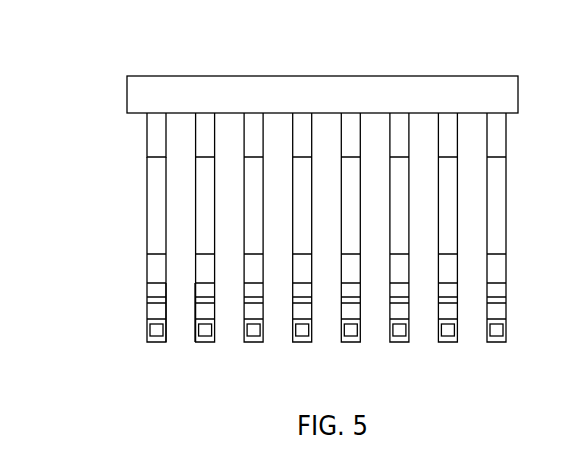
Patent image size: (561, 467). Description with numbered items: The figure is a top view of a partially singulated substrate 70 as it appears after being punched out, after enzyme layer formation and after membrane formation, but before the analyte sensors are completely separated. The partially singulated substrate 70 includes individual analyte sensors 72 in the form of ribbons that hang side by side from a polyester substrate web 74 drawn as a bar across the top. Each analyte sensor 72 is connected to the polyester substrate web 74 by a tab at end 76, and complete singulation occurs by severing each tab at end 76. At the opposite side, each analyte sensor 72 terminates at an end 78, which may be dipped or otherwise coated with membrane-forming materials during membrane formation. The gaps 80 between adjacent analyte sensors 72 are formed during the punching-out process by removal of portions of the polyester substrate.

The partially singulated substrate 70 is at (78, 379).
The analyte sensor 72 is at (147, 218).
The polyester substrate web 74 is at (141, 85).
The end 76 is at (147, 122).
The end 78 is at (155, 343).
The gap 80 is at (183, 328).